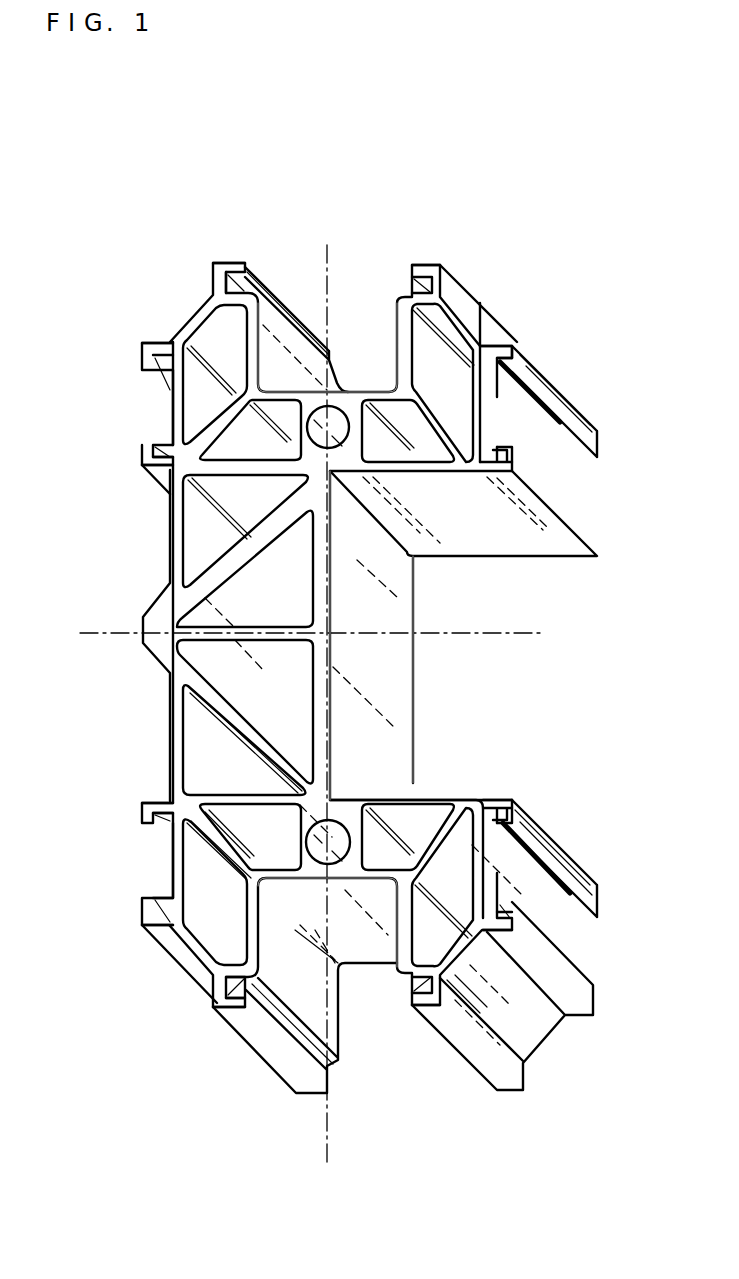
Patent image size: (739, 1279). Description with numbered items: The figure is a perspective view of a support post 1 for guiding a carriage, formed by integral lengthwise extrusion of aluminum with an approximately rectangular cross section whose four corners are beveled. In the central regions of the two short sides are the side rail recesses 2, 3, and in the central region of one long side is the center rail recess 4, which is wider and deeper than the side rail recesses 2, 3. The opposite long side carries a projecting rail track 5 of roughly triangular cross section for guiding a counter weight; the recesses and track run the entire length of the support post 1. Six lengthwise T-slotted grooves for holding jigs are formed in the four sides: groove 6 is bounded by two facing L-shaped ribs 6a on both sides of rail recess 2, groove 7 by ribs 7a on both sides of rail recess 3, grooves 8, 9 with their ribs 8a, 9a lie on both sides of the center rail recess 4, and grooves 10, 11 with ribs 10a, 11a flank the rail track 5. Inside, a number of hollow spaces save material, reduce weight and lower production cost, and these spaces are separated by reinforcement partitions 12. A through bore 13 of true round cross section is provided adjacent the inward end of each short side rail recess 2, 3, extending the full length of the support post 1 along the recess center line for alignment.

The support post 1 is at (369, 678).
The rail recess 2 is at (351, 360).
The rail recess 3 is at (358, 990).
The center rail recess 4 is at (446, 724).
The rail track 5 is at (142, 642).
The T-slotted groove 6 is at (245, 282).
The L-shaped rib 6a is at (331, 239).
The T-slotted groove 7 is at (273, 1013).
The L-shaped rib 7a is at (283, 1067).
The T-slotted groove 8 is at (548, 406).
The L-shaped rib 8a is at (578, 437).
The T-slotted groove 9 is at (552, 860).
The L-shaped rib 9a is at (577, 893).
The T-slotted groove 10 is at (129, 406).
The L-shaped rib 10a is at (112, 416).
The T-slotted groove 11 is at (126, 856).
The L-shaped rib 11a is at (108, 889).
The reinforcement partition 12 is at (328, 625).
The through bore 13 is at (293, 635).